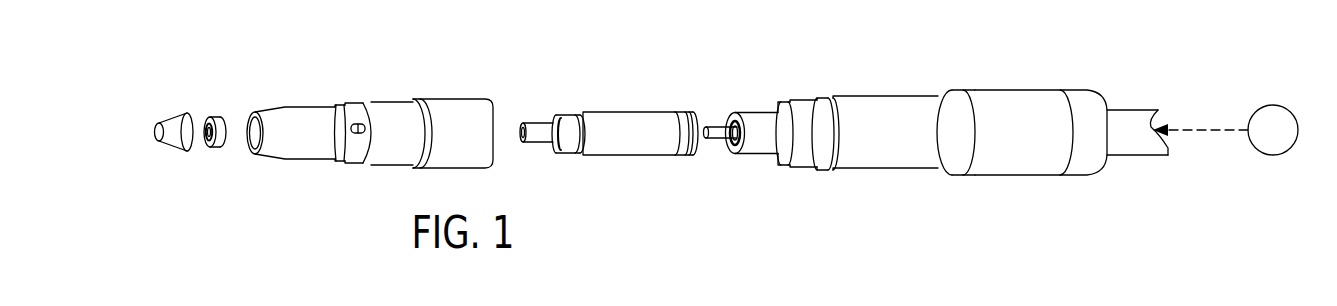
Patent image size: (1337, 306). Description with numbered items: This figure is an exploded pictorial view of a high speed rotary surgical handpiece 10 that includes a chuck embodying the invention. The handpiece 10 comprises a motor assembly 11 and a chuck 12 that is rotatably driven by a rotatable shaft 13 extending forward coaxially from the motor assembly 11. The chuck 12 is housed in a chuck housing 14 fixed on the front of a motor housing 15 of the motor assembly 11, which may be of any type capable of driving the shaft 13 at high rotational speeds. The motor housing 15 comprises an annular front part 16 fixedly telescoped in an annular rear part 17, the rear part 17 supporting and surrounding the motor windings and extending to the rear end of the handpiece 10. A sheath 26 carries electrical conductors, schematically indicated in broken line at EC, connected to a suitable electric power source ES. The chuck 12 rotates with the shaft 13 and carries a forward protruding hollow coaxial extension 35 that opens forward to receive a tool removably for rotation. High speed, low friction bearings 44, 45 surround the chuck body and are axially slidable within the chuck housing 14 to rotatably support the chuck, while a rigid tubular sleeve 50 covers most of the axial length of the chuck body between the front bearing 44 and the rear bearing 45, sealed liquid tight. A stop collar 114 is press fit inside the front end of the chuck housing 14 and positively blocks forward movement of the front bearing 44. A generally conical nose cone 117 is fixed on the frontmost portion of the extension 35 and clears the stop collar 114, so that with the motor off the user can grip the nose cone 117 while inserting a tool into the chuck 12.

The high speed rotary surgical handpiece 10 is at (963, 91).
The motor assembly 11 is at (873, 91).
The chuck 12 is at (622, 133).
The rotatable shaft 13 is at (715, 127).
The chuck housing 14 is at (438, 97).
The motor housing 15 is at (980, 81).
The annular front part 16 is at (795, 108).
The annular rear part 17 is at (1022, 105).
The sheath 26 is at (1132, 120).
The hollow coaxial extension 35 is at (533, 130).
The front bearing 44 is at (570, 148).
The rear bearing 45 is at (690, 153).
The tubular sleeve 50 is at (648, 145).
The stop collar 114 is at (215, 118).
The nose cone 117 is at (173, 123).
The electrical conductors EC is at (1214, 128).
The electric power source ES is at (1273, 130).